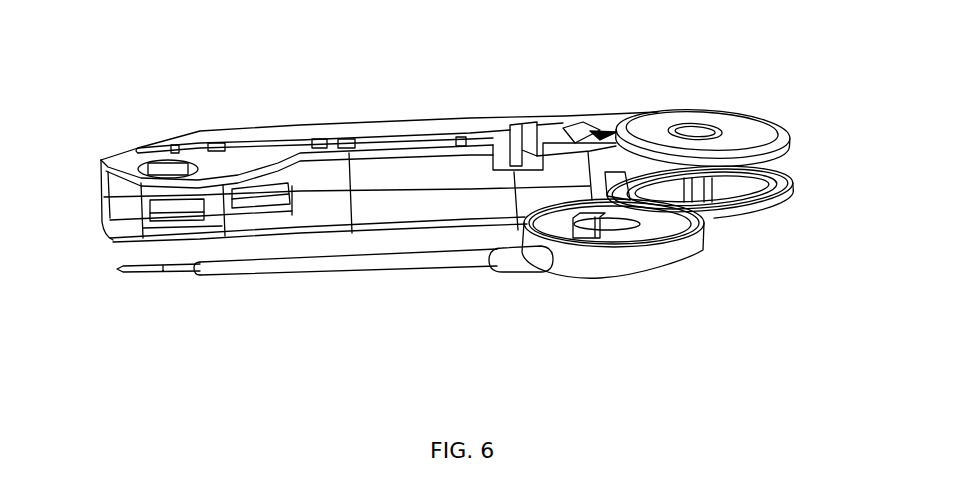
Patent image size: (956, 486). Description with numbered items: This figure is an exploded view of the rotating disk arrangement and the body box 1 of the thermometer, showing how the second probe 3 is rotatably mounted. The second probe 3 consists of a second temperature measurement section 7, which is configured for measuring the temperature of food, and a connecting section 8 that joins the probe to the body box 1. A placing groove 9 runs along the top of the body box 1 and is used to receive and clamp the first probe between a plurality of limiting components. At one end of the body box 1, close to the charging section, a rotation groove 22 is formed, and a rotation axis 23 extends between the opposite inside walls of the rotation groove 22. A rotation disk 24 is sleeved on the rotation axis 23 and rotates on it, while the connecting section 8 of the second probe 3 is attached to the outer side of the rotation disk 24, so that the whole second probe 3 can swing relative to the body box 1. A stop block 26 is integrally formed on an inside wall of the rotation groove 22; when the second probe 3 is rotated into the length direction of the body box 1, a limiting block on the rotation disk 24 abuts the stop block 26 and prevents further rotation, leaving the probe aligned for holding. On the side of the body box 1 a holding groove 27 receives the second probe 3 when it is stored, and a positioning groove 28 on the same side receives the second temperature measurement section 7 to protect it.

The body box 1 is at (283, 135).
The second probe 3 is at (344, 291).
The second temperature measurement section 7 is at (157, 273).
The connecting section 8 is at (503, 260).
The placing groove 9 is at (402, 142).
The rotation groove 22 is at (770, 152).
The rotation axis 23 is at (700, 187).
The rotation disk 24 is at (640, 260).
The stop block 26 is at (733, 205).
The holding groove 27 is at (420, 180).
The positioning groove 28 is at (246, 191).